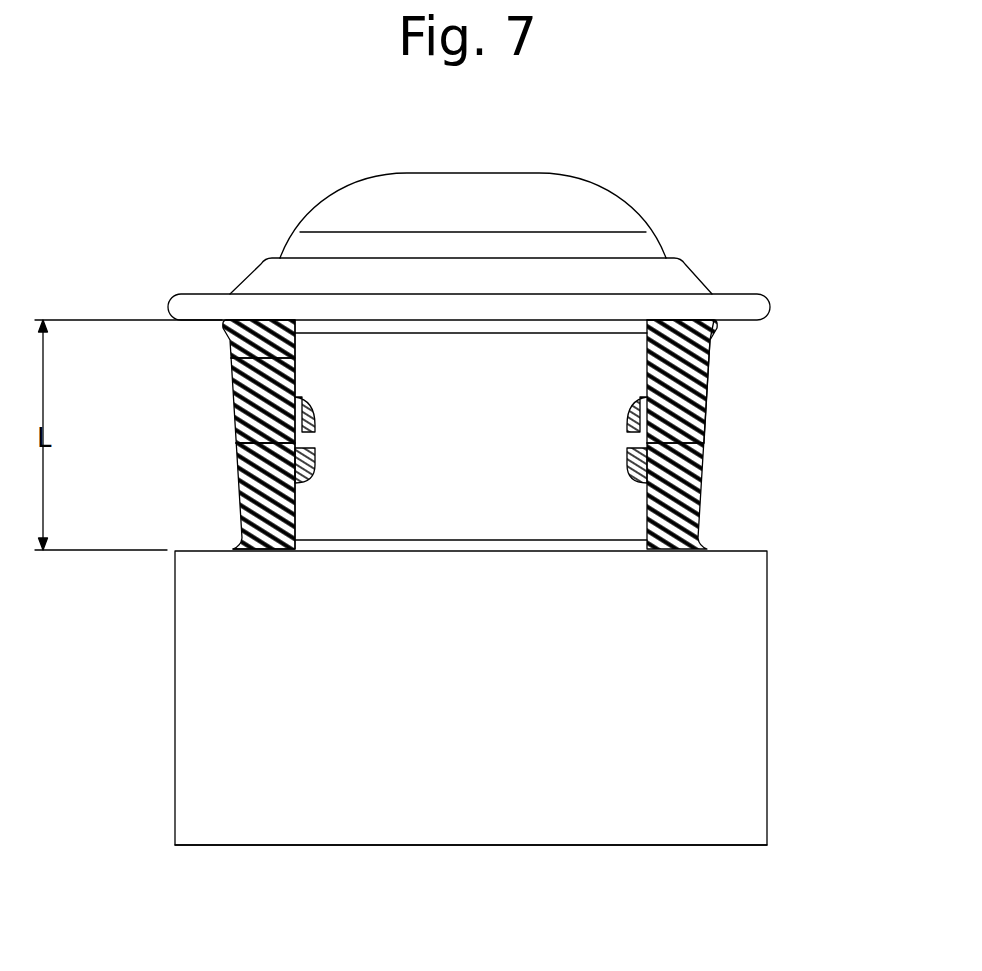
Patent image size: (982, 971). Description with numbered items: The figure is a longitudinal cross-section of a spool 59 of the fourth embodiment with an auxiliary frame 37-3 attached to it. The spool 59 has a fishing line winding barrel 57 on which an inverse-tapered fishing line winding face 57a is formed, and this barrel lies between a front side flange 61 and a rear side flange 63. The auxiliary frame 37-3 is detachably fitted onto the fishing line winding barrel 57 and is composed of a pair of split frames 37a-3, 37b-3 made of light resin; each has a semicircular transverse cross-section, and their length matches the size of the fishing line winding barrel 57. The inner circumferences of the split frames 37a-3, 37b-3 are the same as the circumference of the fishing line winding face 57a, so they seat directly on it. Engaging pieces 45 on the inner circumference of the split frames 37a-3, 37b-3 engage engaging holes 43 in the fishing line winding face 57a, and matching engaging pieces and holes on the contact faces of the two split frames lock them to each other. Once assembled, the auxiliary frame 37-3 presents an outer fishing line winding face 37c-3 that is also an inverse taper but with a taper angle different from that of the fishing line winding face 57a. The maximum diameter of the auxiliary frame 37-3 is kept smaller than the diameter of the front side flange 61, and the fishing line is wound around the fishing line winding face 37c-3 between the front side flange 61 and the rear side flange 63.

The front side flange 61 is at (632, 305).
The auxiliary frame 37-3 is at (694, 314).
The fishing line winding face 57a is at (231, 358).
The fishing line winding face 37c-3 is at (232, 406).
The split frame 37a-3 is at (243, 517).
The split frame 37b-3 is at (707, 407).
The engaging hole 43 is at (240, 445).
The engaging piece 45 is at (313, 432).
The fishing line winding barrel 57 is at (564, 551).
The spool 59 is at (268, 814).
The rear side flange 63 is at (477, 832).